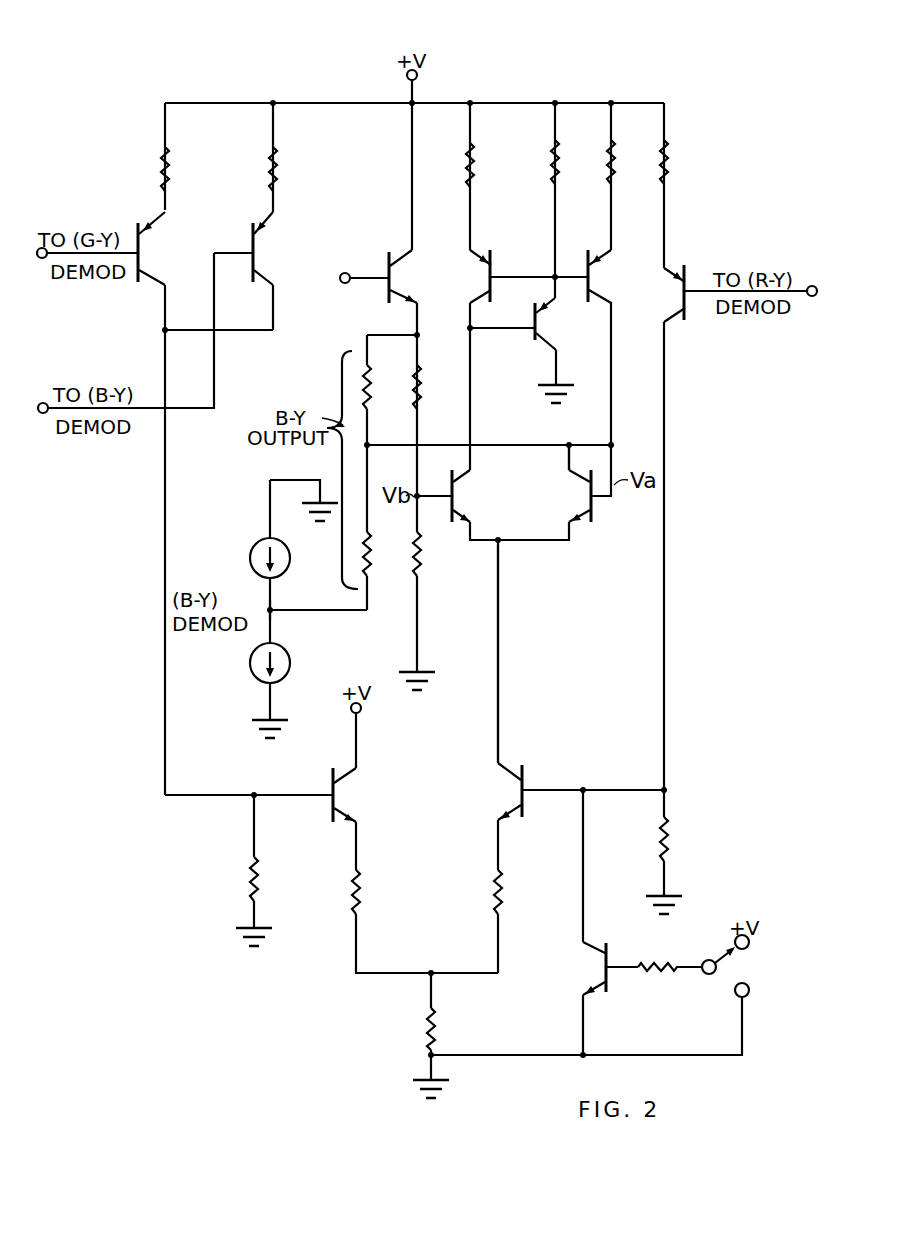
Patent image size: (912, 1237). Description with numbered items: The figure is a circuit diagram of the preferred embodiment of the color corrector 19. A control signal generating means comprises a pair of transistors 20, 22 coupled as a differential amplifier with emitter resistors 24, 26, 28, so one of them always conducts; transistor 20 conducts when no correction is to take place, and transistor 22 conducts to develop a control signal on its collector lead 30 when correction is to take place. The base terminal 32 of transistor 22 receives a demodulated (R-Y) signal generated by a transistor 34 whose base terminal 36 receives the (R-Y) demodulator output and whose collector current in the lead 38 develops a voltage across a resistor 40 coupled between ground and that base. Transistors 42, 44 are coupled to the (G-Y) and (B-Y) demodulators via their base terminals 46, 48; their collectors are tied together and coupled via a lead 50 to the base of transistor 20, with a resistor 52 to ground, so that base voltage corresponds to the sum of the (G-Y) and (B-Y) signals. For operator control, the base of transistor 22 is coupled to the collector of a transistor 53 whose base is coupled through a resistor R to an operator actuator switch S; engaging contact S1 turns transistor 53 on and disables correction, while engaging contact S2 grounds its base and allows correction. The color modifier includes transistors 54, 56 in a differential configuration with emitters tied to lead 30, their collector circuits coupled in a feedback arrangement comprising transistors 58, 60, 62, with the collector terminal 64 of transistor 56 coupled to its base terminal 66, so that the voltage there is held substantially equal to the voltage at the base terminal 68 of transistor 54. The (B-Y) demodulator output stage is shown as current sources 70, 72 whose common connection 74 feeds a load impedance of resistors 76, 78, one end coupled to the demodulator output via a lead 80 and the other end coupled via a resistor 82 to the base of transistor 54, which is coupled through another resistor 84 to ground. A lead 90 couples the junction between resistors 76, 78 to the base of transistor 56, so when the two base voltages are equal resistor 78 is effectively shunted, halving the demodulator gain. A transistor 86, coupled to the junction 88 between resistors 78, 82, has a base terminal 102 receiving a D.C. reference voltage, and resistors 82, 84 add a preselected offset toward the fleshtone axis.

The color corrector 19 is at (714, 597).
The transistor 20 is at (348, 791).
The transistor 22 is at (510, 786).
The emitter resistor 24 is at (354, 895).
The emitter resistor 26 is at (496, 896).
The emitter resistor 28 is at (428, 1030).
The collector lead 30 is at (500, 676).
The base terminal 32 is at (567, 790).
The transistor 34 is at (676, 290).
The base terminal 36 is at (706, 296).
The lead 38 is at (668, 401).
The resistor 40 is at (676, 840).
The transistor 42 is at (148, 253).
The transistor 44 is at (257, 258).
The base terminal 46 is at (136, 243).
The base terminal 48 is at (228, 262).
The lead 50 is at (226, 795).
The resistor 52 is at (252, 884).
The transistor 53 is at (598, 967).
The transistor 54 is at (463, 496).
The transistor 56 is at (585, 496).
The transistor 58 is at (487, 280).
The transistor 60 is at (540, 329).
The transistor 62 is at (600, 285).
The collector terminal 64 is at (569, 452).
The base terminal 66 is at (604, 496).
The base terminal 68 is at (433, 495).
The current source 70 is at (291, 548).
The current source 72 is at (291, 656).
The common connection 74 is at (275, 606).
The resistor 76 is at (373, 560).
The resistor 78 is at (372, 385).
The lead 80 is at (360, 612).
The resistor 82 is at (422, 386).
The resistor 84 is at (425, 560).
The transistor 86 is at (408, 306).
The junction 88 is at (424, 337).
The lead 90 is at (402, 446).
The base terminal 102 is at (358, 276).
The resistor R is at (656, 962).
The operator actuator switch S is at (718, 955).
The contact S1 is at (752, 943).
The contact S2 is at (752, 991).